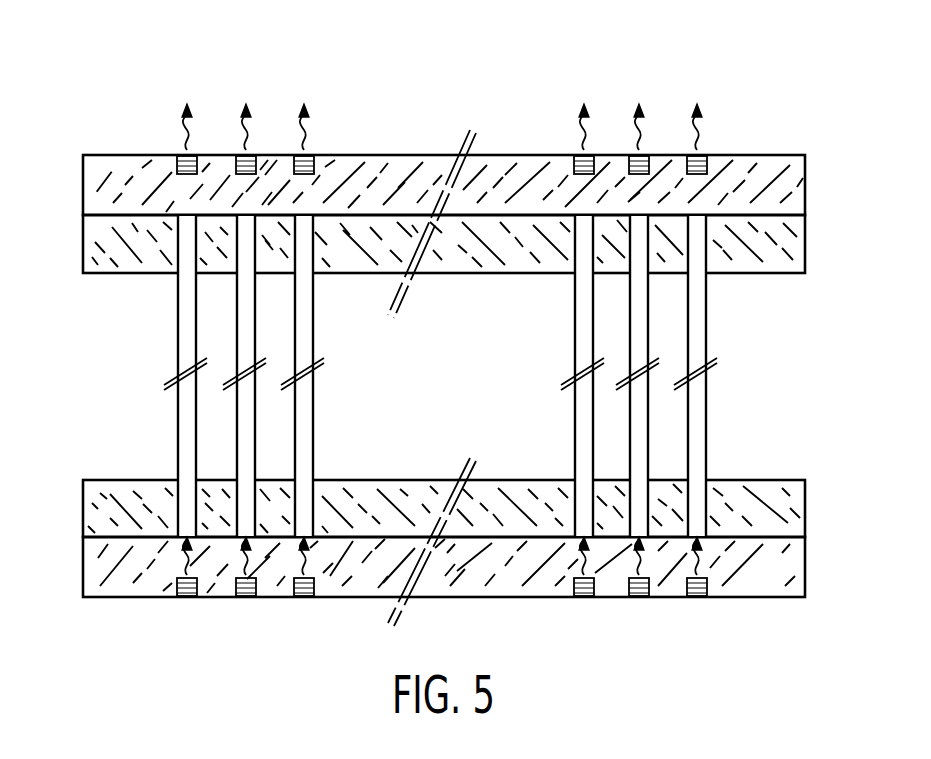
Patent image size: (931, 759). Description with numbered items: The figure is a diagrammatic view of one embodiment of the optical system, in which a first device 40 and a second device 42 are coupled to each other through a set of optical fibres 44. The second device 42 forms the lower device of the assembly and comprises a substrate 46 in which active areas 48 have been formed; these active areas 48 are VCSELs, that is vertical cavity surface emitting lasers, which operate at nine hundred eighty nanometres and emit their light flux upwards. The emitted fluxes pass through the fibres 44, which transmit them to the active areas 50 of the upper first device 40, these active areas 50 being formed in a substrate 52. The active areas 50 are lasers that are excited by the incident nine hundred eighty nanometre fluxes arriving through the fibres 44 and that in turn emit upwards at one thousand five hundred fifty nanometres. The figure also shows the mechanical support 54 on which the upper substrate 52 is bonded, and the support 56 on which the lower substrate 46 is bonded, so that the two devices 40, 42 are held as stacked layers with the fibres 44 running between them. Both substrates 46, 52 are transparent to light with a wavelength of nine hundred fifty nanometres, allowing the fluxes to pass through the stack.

The first device 40 is at (430, 350).
The second device 42 is at (425, 376).
The set of optical fibres 44 is at (253, 440).
The substrate 46 is at (773, 563).
The active areas 48 is at (233, 587).
The active areas 50 is at (224, 155).
The substrate 52 is at (760, 180).
The mechanical support 54 is at (773, 250).
The support 56 is at (500, 500).